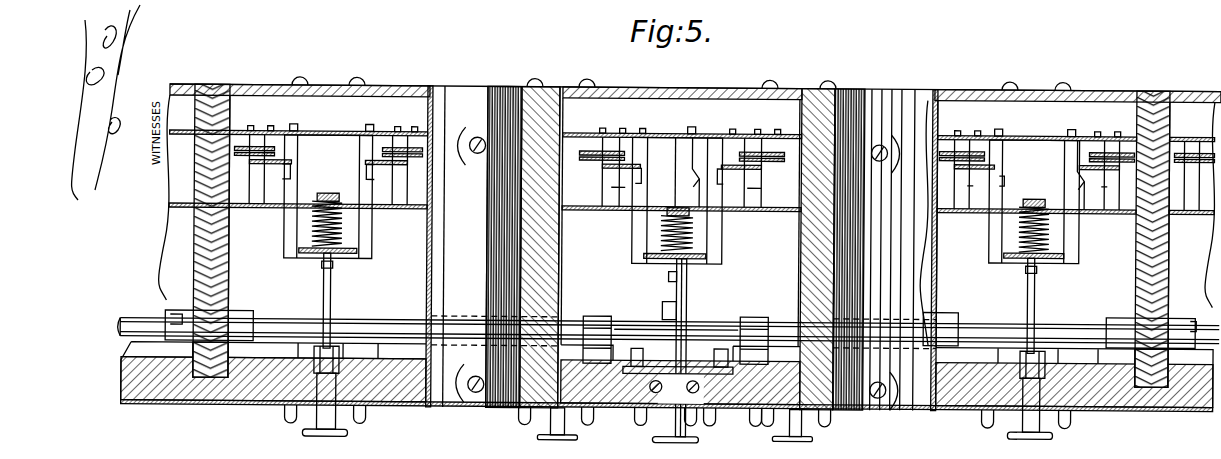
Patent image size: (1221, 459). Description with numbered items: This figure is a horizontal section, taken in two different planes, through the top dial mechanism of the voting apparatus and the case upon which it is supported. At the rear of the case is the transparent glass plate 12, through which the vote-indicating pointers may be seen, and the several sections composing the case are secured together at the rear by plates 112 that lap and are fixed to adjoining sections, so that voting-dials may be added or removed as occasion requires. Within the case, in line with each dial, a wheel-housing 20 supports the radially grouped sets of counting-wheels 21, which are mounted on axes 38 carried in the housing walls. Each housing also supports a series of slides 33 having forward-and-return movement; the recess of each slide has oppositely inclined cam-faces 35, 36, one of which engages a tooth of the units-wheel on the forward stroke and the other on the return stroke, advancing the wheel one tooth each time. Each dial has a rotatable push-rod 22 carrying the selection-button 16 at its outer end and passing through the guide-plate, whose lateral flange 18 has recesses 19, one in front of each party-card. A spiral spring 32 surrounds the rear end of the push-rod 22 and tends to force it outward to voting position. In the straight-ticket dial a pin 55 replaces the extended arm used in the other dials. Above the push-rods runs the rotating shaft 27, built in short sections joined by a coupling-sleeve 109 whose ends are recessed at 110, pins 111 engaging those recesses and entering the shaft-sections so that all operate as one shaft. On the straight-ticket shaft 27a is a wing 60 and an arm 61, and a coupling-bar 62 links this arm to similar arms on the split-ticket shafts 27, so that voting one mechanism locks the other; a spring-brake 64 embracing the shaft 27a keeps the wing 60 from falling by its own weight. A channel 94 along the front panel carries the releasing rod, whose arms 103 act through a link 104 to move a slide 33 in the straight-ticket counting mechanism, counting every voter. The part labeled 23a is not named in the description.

The glass plate 12 is at (312, 84).
The plates 112 is at (432, 90).
The wheel-housing 20 is at (330, 130).
The counting-wheels 21 is at (724, 166).
The slides 33 is at (360, 152).
The cam-face 36 is at (696, 168).
The cam-face 35 is at (1009, 182).
The axes 38 is at (612, 184).
The spiral spring 32 is at (312, 224).
The pin 55 is at (322, 264).
The push-rod 22 is at (333, 284).
The link 104 is at (670, 273).
The arms 103 is at (664, 305).
The rotating shaft 27 is at (380, 318).
The shaft of the straight-ticket dial 27a is at (708, 318).
The coupling-sleeve 109 is at (250, 310).
The recesses 110 is at (178, 312).
The pins 111 is at (150, 316).
The spring-brake 64 is at (600, 313).
The wing 60 is at (705, 363).
The arm 61 is at (673, 372).
The coupling-bar 62 is at (627, 357).
The block 23a is at (726, 358).
The selection-button 16 is at (328, 436).
The lateral flange 18 is at (290, 420).
The recesses 19 is at (300, 420).
The channel 94 is at (756, 416).